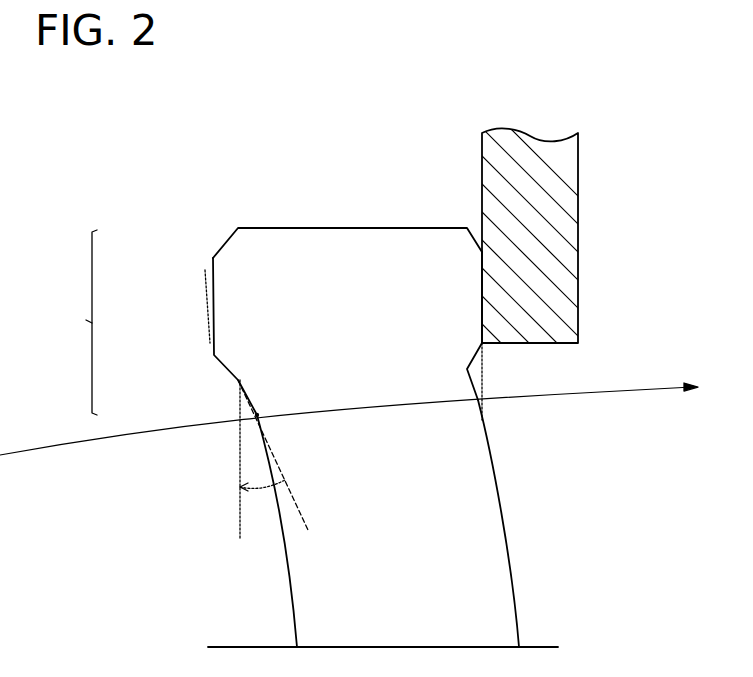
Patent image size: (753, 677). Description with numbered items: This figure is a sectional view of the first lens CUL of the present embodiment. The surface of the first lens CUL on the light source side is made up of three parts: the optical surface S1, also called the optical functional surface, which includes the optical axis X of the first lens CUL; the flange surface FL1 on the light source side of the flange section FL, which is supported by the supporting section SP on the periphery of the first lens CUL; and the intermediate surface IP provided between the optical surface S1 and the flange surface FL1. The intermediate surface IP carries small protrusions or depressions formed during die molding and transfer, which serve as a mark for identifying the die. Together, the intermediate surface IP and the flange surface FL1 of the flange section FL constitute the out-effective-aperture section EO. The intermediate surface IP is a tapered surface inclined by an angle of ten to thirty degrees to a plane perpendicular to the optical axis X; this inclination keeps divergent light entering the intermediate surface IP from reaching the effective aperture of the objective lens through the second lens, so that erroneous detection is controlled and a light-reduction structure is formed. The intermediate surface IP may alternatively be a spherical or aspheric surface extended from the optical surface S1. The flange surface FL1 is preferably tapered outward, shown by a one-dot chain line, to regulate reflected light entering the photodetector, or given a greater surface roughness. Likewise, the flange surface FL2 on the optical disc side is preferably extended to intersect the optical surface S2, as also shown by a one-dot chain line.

The first lens CUL is at (260, 186).
The flange section FL is at (340, 228).
The flange surface on the light source side FL1 is at (205, 272).
The flange surface on the optical disc side FL2 is at (483, 282).
The supporting section SP is at (583, 224).
The out-effective-aperture section EO is at (72, 322).
The intermediate surface IP is at (250, 410).
The optical surface on the light source side S1 is at (292, 583).
The optical surface on the optical disc side S2 is at (521, 583).
The optical axis X is at (370, 646).